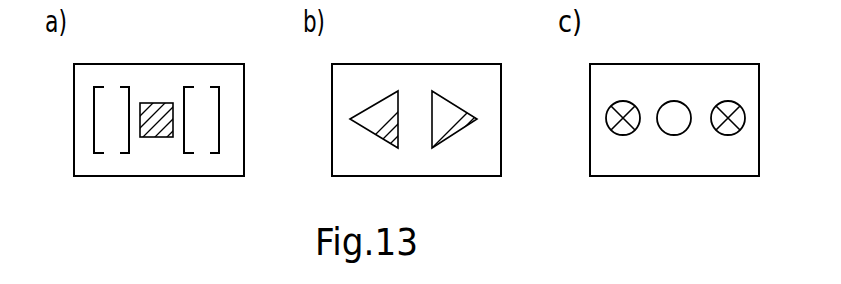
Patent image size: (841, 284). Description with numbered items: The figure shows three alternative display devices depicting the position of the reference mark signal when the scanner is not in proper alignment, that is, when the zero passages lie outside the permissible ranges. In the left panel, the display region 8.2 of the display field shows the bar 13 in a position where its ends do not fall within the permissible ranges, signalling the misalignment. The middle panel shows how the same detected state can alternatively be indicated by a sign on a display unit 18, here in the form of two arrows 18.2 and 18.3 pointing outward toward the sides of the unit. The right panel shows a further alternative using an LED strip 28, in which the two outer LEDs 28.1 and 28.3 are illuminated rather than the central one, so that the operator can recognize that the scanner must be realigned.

The display region 8.2 is at (153, 176).
The bar 13 is at (160, 103).
The display unit 18 is at (477, 176).
The arrow 18.2 is at (380, 100).
The arrow 18.3 is at (462, 100).
The LED strip 28 is at (675, 176).
The LED 28.1 is at (622, 100).
The LED 28.3 is at (723, 100).